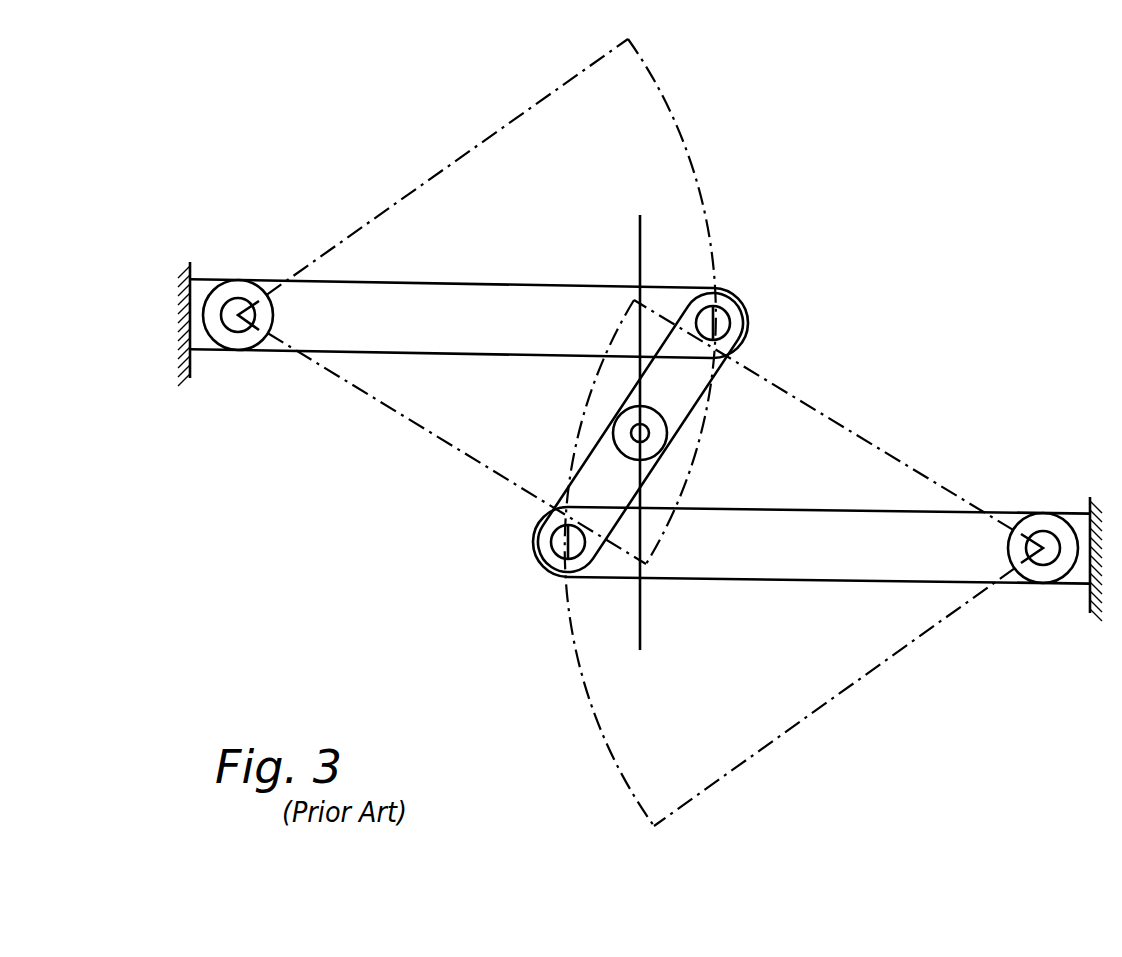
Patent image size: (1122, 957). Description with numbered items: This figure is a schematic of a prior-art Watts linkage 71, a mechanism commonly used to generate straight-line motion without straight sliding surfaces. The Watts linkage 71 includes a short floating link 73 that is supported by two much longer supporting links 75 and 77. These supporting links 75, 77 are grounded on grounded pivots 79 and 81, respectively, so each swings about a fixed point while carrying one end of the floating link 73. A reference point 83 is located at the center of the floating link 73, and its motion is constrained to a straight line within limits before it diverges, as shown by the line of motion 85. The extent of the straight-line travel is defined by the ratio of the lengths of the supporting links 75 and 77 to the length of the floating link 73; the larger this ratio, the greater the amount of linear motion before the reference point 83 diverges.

The Watts linkage 71 is at (798, 298).
The floating link 73 is at (600, 437).
The supporting link 75 is at (472, 284).
The supporting link 77 is at (745, 583).
The grounded pivot 79 is at (218, 279).
The grounded pivot 81 is at (1065, 584).
The reference point 83 is at (649, 433).
The line of motion 85 is at (640, 650).